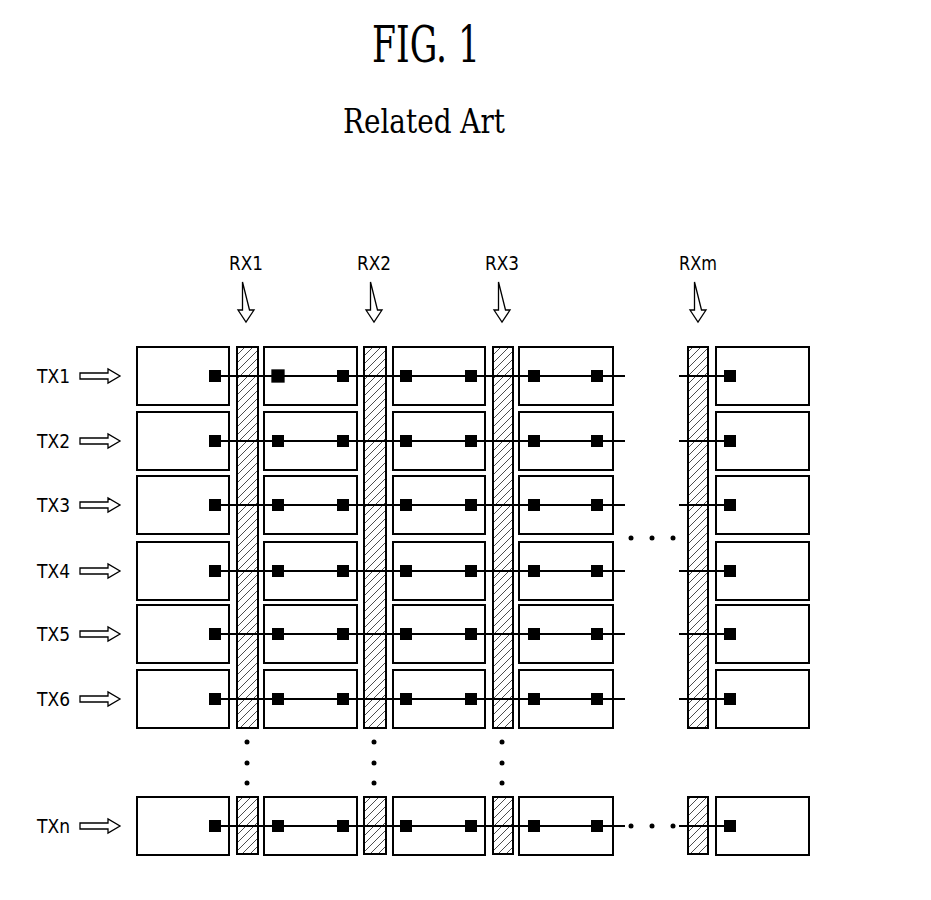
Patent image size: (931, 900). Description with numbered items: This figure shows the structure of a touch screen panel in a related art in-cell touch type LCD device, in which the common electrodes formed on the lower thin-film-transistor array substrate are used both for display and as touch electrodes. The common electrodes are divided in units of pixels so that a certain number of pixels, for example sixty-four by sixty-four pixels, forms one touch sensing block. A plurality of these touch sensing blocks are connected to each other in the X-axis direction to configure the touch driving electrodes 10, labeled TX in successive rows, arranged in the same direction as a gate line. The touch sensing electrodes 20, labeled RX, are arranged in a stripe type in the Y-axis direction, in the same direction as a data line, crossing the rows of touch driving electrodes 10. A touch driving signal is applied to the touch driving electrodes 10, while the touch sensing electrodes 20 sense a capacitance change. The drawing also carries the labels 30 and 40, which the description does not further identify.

The touch driving electrodes 10 is at (180, 347).
The touch sensing electrodes 20 is at (372, 350).
The contact portion 30 is at (276, 370).
The transmission connection line 40 is at (370, 373).